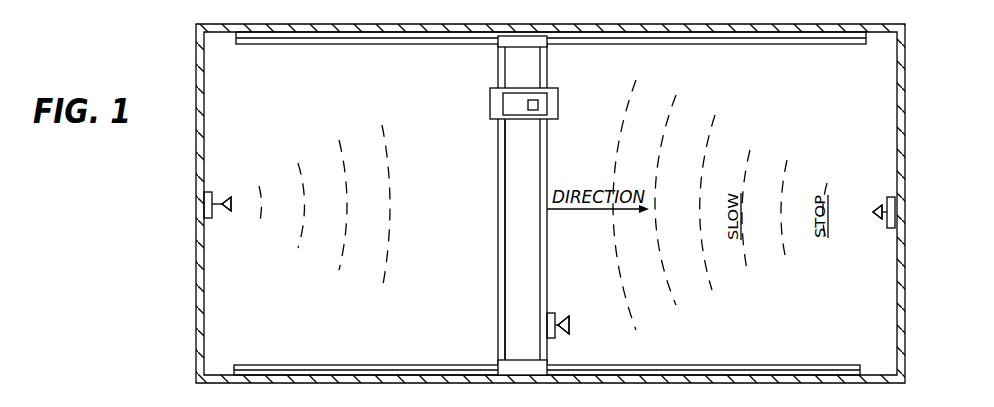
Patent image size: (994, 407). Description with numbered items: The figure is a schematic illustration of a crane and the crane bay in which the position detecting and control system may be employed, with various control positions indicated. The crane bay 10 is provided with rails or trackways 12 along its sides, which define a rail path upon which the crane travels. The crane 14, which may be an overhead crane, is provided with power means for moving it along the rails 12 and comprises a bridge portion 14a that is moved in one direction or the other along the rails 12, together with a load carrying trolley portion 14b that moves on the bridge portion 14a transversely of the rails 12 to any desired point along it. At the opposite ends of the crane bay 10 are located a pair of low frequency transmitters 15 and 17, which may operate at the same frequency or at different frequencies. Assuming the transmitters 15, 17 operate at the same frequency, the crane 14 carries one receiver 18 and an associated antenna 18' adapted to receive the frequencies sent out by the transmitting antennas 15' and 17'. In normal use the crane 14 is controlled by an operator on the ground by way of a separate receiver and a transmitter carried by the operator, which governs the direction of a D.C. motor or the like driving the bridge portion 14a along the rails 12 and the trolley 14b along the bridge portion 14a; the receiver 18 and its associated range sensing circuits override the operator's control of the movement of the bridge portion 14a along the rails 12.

The crane bay 10 is at (194, 30).
The rails or trackways 12 is at (771, 45).
The crane 14 is at (496, 285).
The bridge portion 14a is at (505, 161).
The load carrying trolley portion 14b is at (556, 90).
The low frequency transmitter 15 is at (220, 184).
The transmitting antenna 15' is at (228, 229).
The low frequency transmitter 17 is at (877, 191).
The transmitting antenna 17' is at (864, 234).
The receiver 18 is at (566, 309).
The antenna 18' is at (584, 339).